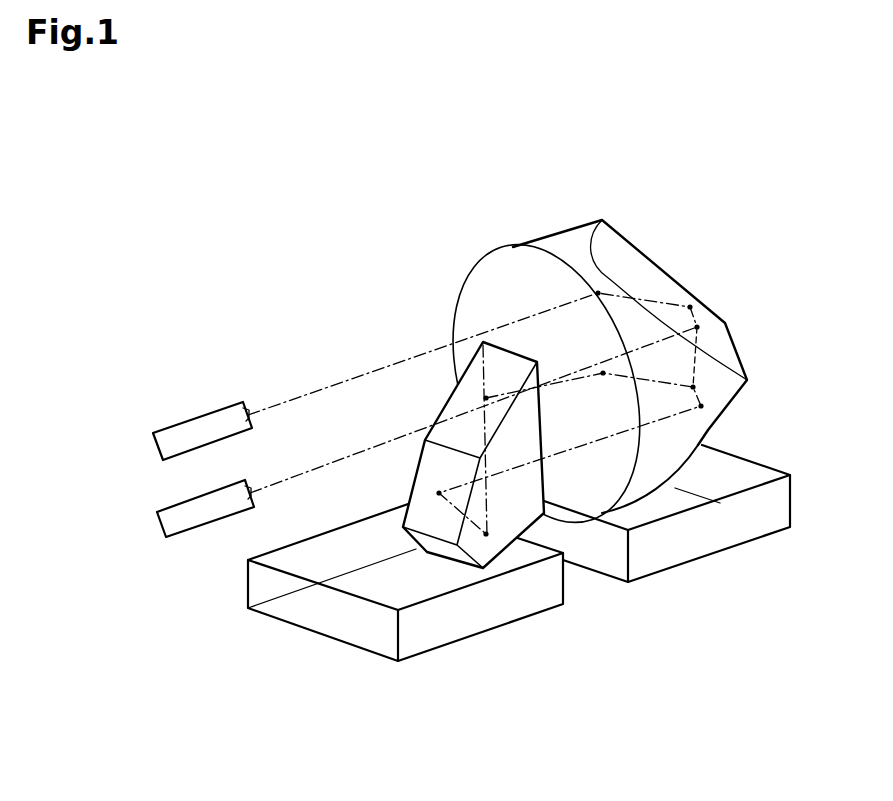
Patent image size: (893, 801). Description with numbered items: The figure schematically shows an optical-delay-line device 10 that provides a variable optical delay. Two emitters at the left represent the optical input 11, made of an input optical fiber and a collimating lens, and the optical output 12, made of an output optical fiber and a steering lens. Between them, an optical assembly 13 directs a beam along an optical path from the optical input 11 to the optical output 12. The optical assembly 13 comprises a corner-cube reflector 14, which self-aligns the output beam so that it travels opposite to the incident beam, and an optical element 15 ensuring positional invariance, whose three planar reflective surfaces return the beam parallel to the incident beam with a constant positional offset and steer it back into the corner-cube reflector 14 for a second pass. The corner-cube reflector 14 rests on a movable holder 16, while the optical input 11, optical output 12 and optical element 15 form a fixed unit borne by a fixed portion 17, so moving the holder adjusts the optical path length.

The optical-delay-line device 10 is at (252, 290).
The optical input 11 is at (213, 413).
The optical output 12 is at (208, 523).
The optical assembly 13 is at (373, 230).
The corner-cube reflector 14 is at (559, 233).
The optical element 15 is at (437, 395).
The movable holder 16 is at (678, 565).
The fixed portion 17 is at (465, 638).